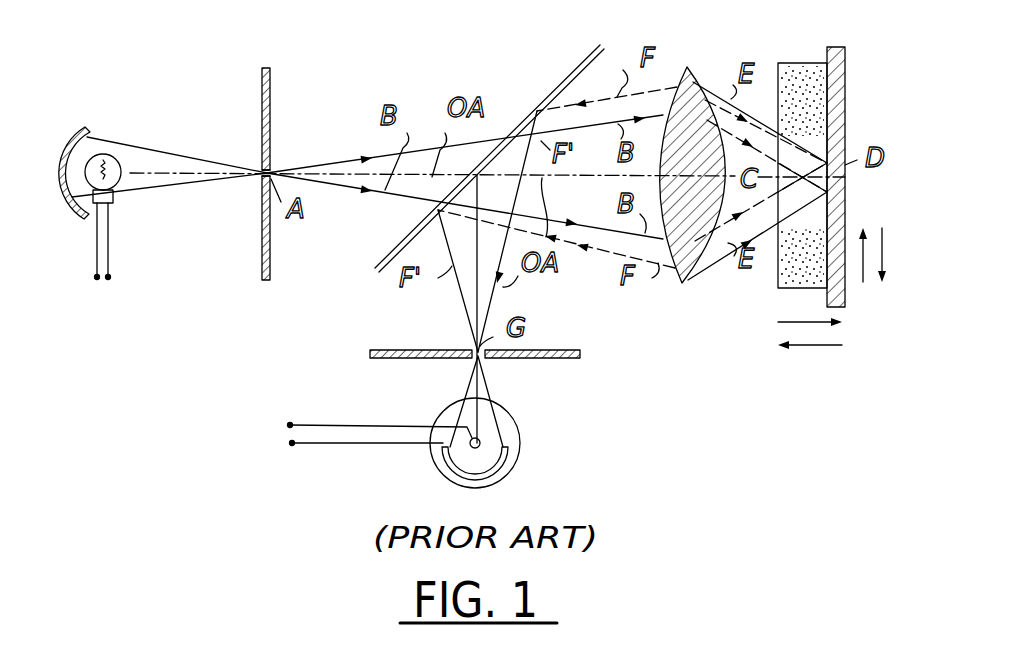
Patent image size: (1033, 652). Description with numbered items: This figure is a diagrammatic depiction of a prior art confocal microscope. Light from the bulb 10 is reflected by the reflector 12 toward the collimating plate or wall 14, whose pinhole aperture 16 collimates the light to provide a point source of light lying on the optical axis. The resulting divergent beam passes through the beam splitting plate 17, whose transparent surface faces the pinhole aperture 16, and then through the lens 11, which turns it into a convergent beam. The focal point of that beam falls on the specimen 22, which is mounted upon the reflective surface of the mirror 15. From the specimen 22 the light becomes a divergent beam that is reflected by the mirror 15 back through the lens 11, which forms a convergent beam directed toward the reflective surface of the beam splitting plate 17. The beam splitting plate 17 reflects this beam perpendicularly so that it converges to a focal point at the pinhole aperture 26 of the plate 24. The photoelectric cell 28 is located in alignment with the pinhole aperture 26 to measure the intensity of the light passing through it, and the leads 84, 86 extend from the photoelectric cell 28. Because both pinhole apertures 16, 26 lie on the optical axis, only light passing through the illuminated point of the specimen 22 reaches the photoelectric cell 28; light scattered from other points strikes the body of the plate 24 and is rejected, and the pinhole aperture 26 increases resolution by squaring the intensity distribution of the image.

The bulb 10 is at (118, 155).
The lens 11 is at (690, 70).
The reflector 12 is at (82, 136).
The collimating plate or wall 14 is at (270, 83).
The mirror 15 is at (845, 97).
The pinhole aperture 16 is at (273, 167).
The beam splitting plate 17 is at (568, 73).
The specimen 22 is at (810, 63).
The plate 24 is at (572, 360).
The pinhole aperture 26 is at (470, 360).
The photoelectric cell 28 is at (520, 445).
The detector lead 84 is at (382, 425).
The detector lead 86 is at (380, 447).